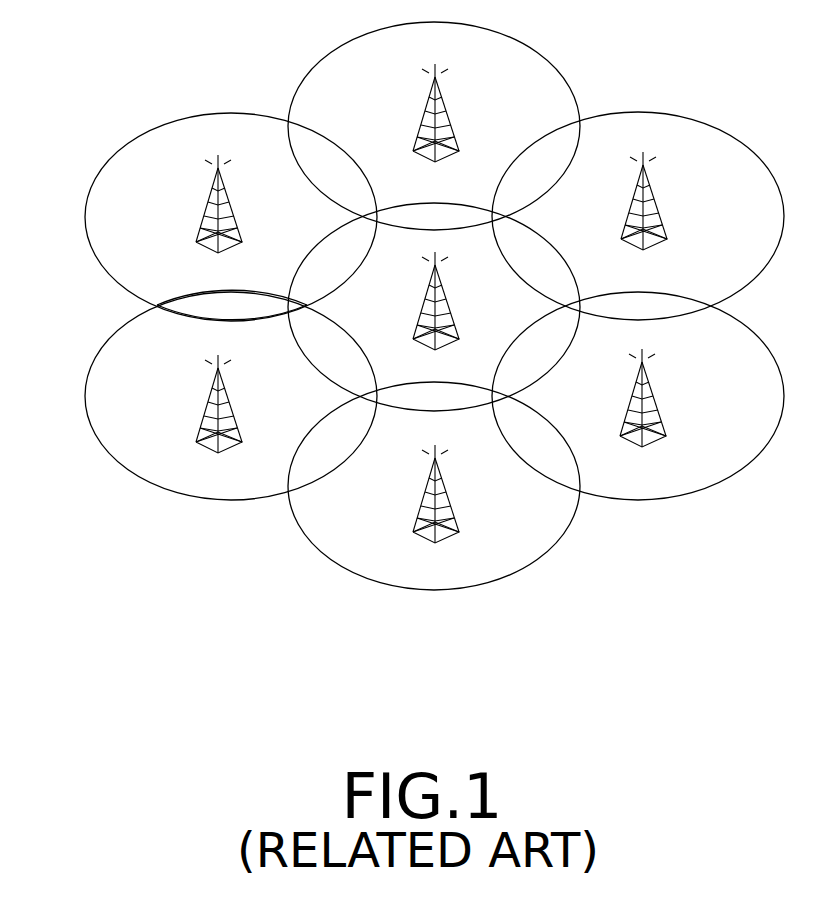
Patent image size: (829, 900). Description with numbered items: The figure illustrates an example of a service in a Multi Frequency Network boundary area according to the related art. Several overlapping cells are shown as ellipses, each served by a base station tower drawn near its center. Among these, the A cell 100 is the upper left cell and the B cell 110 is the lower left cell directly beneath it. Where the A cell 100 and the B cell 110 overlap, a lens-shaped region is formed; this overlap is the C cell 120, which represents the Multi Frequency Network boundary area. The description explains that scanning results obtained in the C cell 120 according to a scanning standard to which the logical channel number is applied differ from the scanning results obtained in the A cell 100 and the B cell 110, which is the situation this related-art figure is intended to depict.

The A cell 100 is at (222, 112).
The B cell 110 is at (227, 500).
The C cell 120 is at (192, 296).